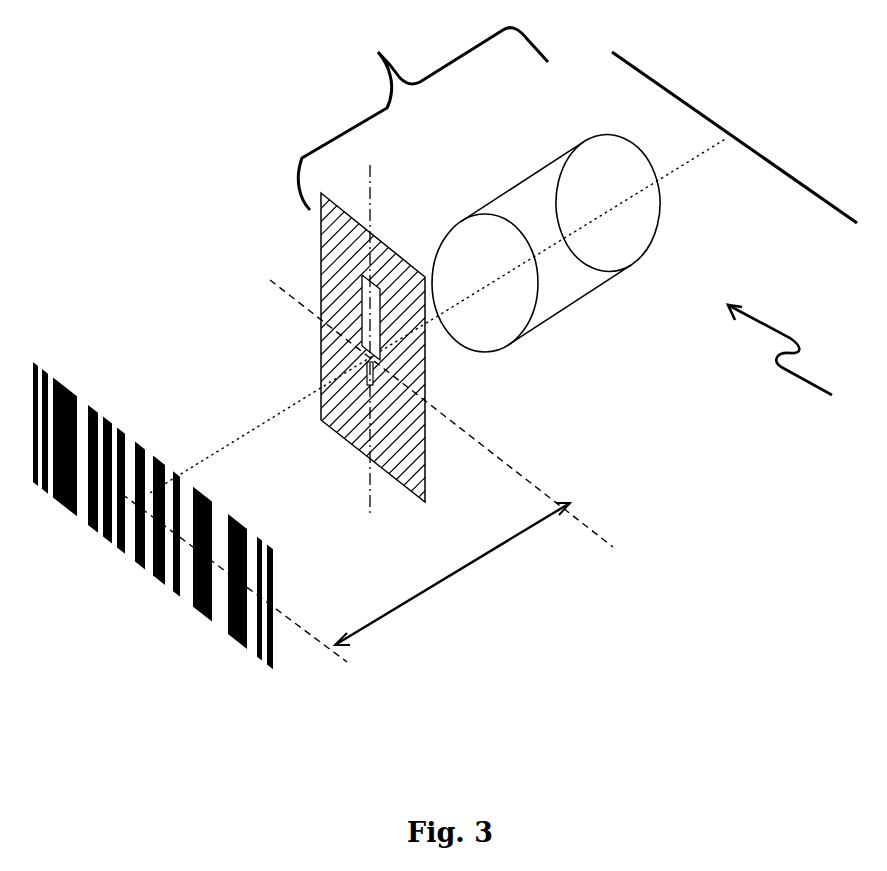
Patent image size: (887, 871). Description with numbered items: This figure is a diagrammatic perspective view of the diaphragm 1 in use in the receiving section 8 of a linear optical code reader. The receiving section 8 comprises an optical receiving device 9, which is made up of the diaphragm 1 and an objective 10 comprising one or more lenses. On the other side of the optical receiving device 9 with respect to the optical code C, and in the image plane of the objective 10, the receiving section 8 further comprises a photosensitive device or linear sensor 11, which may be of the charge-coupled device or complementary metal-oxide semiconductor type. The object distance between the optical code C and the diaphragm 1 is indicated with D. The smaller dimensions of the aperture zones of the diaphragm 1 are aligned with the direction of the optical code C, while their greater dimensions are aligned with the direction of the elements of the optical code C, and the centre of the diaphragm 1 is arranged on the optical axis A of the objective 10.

The diaphragm 1 is at (407, 440).
The receiving section 8 is at (791, 365).
The optical receiving device 9 is at (423, 115).
The objective 10 is at (573, 302).
The linear sensor 11 is at (692, 105).
The optical axis A is at (248, 432).
The optical code C is at (72, 392).
The object distance D is at (452, 574).